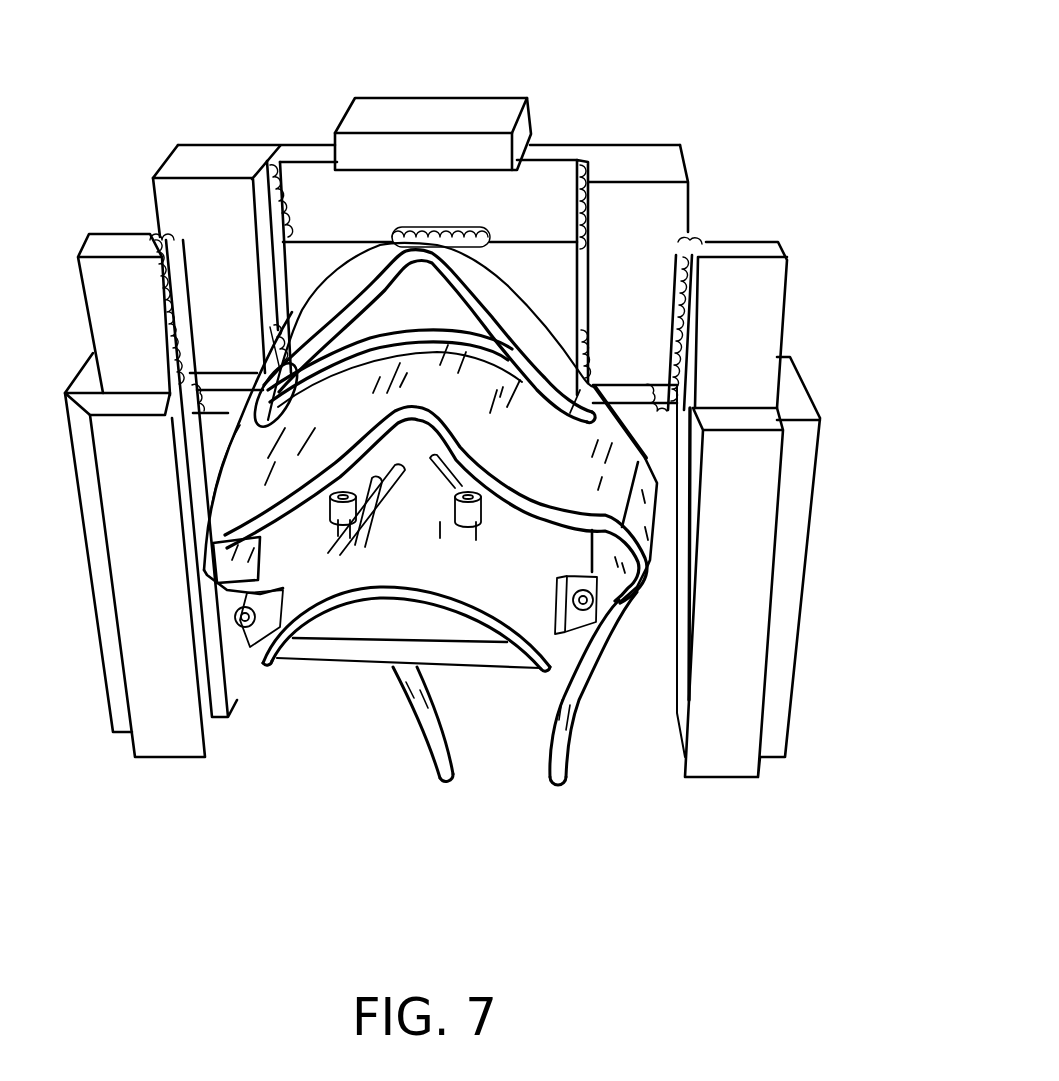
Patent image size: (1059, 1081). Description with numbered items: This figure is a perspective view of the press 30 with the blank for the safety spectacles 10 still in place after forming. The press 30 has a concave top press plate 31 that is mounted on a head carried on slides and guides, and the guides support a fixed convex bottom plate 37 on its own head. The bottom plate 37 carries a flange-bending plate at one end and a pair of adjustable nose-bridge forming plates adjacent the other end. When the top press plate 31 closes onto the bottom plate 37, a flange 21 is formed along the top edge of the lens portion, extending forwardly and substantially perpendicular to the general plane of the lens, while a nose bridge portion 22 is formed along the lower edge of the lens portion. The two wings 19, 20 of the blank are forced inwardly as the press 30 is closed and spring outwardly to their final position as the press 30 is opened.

The safety spectacles 10 is at (567, 443).
The wing portion 19 is at (437, 790).
The wing portion 20 is at (560, 790).
The flange 21 is at (457, 343).
The nose bridge portion 22 is at (527, 510).
The press 30 is at (722, 106).
The concave top press plate 31 is at (500, 266).
The bottom plate 37 is at (373, 592).